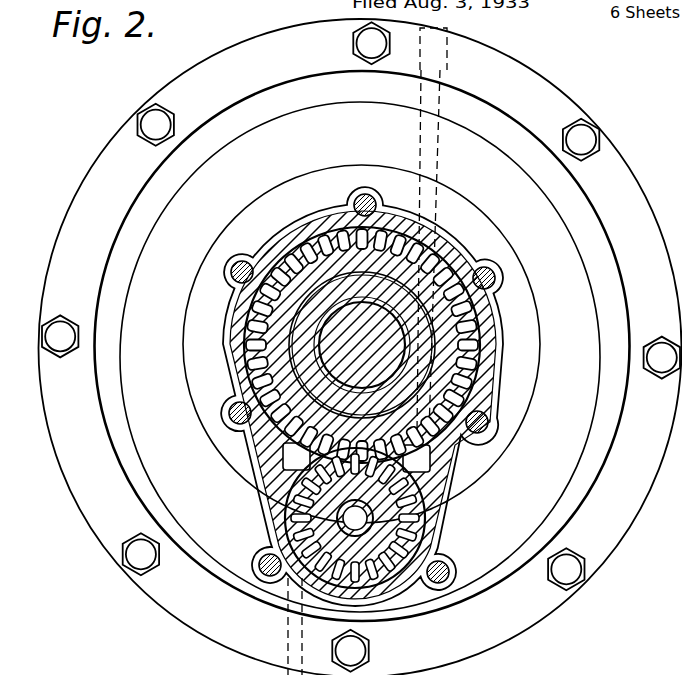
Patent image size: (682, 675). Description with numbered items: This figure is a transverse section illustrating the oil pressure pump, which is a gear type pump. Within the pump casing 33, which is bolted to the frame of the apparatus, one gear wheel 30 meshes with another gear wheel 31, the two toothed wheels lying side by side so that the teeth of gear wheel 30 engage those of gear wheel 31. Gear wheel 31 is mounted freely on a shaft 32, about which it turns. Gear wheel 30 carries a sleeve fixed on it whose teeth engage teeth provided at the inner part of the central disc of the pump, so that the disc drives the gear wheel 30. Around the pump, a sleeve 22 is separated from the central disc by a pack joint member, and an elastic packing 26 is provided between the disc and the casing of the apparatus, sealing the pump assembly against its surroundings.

The elastic packing 26 is at (119, 149).
The gear wheel 30 is at (477, 313).
The sleeve 22 is at (406, 371).
The gear wheel 31 is at (372, 562).
The shaft 32 is at (372, 518).
The pump casing 33 is at (452, 252).